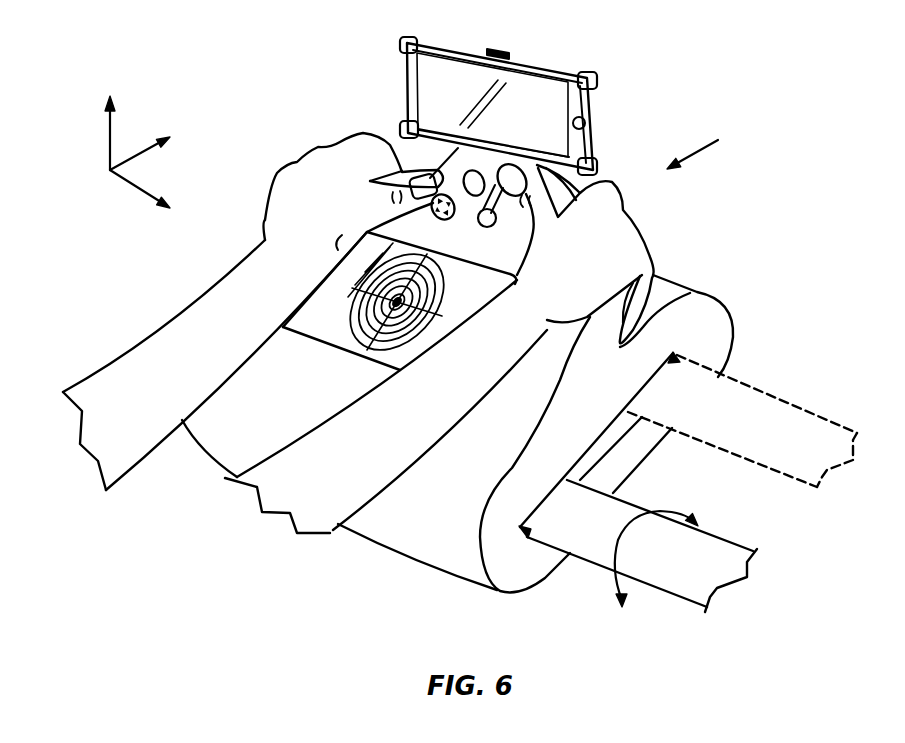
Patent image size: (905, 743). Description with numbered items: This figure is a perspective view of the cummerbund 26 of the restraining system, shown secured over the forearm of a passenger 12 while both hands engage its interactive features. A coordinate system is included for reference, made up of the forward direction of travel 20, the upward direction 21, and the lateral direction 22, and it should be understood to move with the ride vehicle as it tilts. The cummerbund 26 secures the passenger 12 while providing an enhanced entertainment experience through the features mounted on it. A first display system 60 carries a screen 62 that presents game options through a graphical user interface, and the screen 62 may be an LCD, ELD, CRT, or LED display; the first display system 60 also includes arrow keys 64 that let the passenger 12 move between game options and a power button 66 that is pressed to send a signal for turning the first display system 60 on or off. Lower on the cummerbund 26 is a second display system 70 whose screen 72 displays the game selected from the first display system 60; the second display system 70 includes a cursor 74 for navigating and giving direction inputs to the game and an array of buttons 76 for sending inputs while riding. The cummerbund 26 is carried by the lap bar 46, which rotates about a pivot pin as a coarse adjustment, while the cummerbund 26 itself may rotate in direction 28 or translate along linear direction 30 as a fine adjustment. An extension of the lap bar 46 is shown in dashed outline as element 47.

The passenger 12 is at (113, 360).
The forward direction of travel 20 is at (145, 155).
The upward direction 21 is at (112, 126).
The lateral direction 22 is at (139, 191).
The cummerbund 26 is at (420, 562).
The direction of rotation 28 is at (627, 532).
The linear direction 30 is at (704, 154).
The lap bar 46 is at (715, 533).
The strap extension (phantom) 47 is at (775, 400).
The first display system 60 is at (518, 97).
The screen 62 is at (488, 72).
The arrow keys 64 is at (587, 125).
The power button 66 is at (502, 48).
The second display system 70 is at (353, 355).
The screen 72 is at (393, 247).
The cursor 74 is at (492, 222).
The array of buttons 76 is at (450, 215).